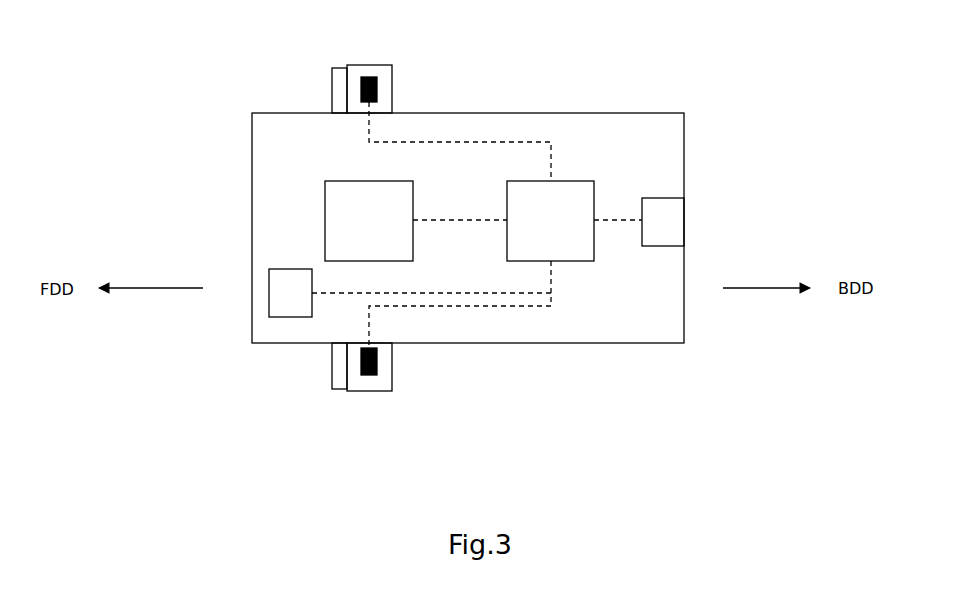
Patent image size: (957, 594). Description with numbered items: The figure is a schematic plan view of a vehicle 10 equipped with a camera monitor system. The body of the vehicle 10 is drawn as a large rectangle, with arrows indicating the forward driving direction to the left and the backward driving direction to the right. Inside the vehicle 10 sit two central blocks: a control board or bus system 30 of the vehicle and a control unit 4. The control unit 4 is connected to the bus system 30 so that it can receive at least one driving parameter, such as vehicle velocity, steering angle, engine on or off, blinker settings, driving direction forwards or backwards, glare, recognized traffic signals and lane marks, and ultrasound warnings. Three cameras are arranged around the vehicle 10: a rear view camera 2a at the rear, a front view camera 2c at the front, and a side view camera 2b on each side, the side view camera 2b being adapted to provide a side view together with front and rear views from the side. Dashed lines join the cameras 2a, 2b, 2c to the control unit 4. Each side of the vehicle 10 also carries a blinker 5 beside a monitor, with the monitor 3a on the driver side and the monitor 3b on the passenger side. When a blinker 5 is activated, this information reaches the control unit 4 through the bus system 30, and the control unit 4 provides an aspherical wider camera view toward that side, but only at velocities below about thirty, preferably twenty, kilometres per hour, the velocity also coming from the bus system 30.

The vehicle 10 is at (250, 229).
The control board or bus system 30 is at (369, 221).
The control unit 4 is at (550, 221).
The rear view camera 2a is at (663, 222).
The side view camera 2b is at (379, 90).
The front view camera 2c is at (290, 293).
The blinker 5 is at (330, 90).
The monitor 3a is at (368, 392).
The monitor 3b is at (368, 62).